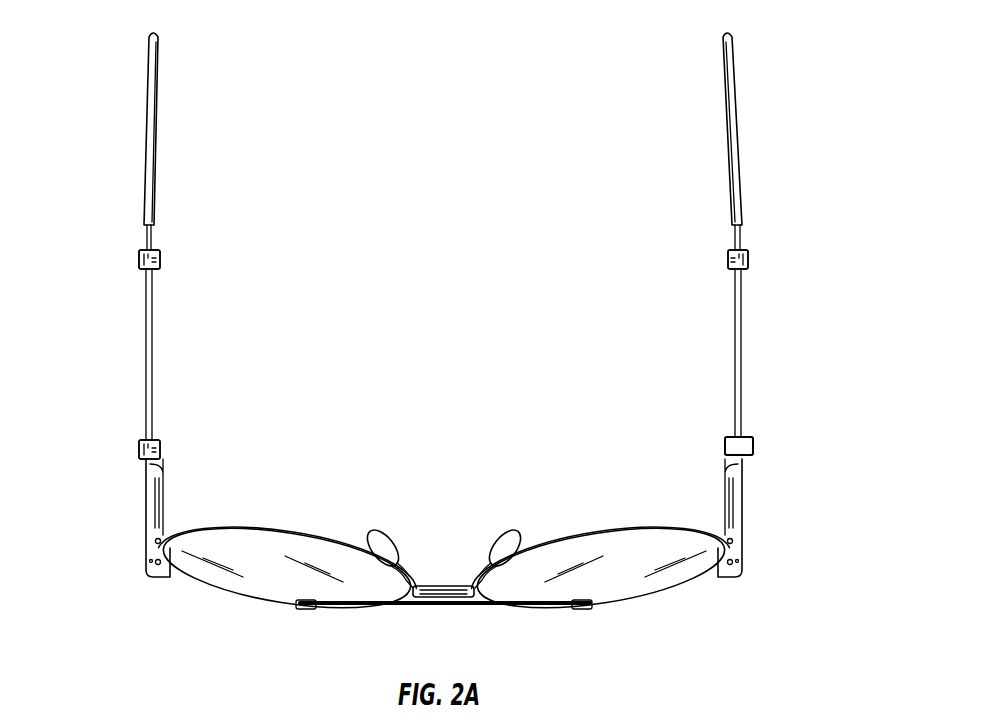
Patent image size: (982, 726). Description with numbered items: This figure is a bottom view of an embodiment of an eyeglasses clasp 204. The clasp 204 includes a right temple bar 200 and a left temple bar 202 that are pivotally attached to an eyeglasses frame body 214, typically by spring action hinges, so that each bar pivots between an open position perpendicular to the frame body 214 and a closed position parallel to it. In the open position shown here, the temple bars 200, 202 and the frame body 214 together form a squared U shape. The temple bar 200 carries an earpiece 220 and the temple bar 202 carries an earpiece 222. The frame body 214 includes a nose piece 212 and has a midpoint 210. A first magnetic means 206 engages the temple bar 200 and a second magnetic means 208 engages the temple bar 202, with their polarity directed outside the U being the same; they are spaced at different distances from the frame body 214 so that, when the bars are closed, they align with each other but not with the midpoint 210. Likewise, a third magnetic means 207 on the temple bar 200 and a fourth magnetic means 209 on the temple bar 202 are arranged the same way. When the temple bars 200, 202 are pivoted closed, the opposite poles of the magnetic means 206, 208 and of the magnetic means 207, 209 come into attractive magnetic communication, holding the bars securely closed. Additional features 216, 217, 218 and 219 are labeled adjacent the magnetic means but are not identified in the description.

The right temple bar 200 is at (742, 353).
The left temple bar 202 is at (144, 361).
The eyeglasses clasp 204 is at (462, 437).
The first magnetic means 206 is at (754, 445).
The third magnetic means 207 is at (750, 255).
The second magnetic means 208 is at (160, 255).
The fourth magnetic means 209 is at (160, 445).
The midpoint 210 is at (448, 576).
The nose piece 212 is at (445, 607).
The eyeglasses frame body 214 is at (301, 529).
The right lower hinge pin 216 is at (726, 445).
The right upper hinge pin 217 is at (727, 258).
The left upper hinge pin 218 is at (137, 258).
The left lower hinge pin 219 is at (137, 448).
The earpiece 220 is at (738, 112).
The earpiece 222 is at (157, 113).